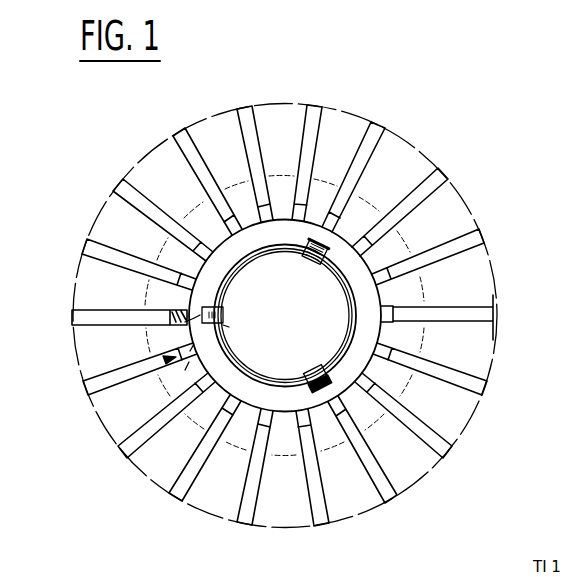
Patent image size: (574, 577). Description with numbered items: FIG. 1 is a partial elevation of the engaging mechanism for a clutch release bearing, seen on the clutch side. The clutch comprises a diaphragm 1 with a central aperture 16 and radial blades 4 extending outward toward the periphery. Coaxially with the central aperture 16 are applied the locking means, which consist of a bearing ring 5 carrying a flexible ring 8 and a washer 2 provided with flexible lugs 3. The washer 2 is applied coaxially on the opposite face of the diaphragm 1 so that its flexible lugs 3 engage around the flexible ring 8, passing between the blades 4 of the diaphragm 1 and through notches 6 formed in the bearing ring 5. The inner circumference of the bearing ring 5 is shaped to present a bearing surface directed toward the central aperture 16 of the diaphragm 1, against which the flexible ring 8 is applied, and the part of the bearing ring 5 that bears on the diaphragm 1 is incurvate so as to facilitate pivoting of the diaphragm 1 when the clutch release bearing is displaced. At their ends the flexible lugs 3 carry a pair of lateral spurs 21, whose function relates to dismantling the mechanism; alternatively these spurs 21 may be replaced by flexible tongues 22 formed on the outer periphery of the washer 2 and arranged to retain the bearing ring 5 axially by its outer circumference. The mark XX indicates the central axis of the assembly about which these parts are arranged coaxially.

The diaphragm 1 is at (421, 146).
The washer 2 is at (395, 313).
The flexible lugs 3 is at (318, 243).
The blades 4 is at (147, 165).
The bearing ring 5 is at (342, 375).
The notches 6 is at (166, 357).
The flexible ring 8 is at (252, 258).
The central aperture 16 is at (280, 352).
The lateral spurs 21 is at (225, 325).
The flexible tongues 22 is at (242, 275).
The center axis XX is at (282, 317).